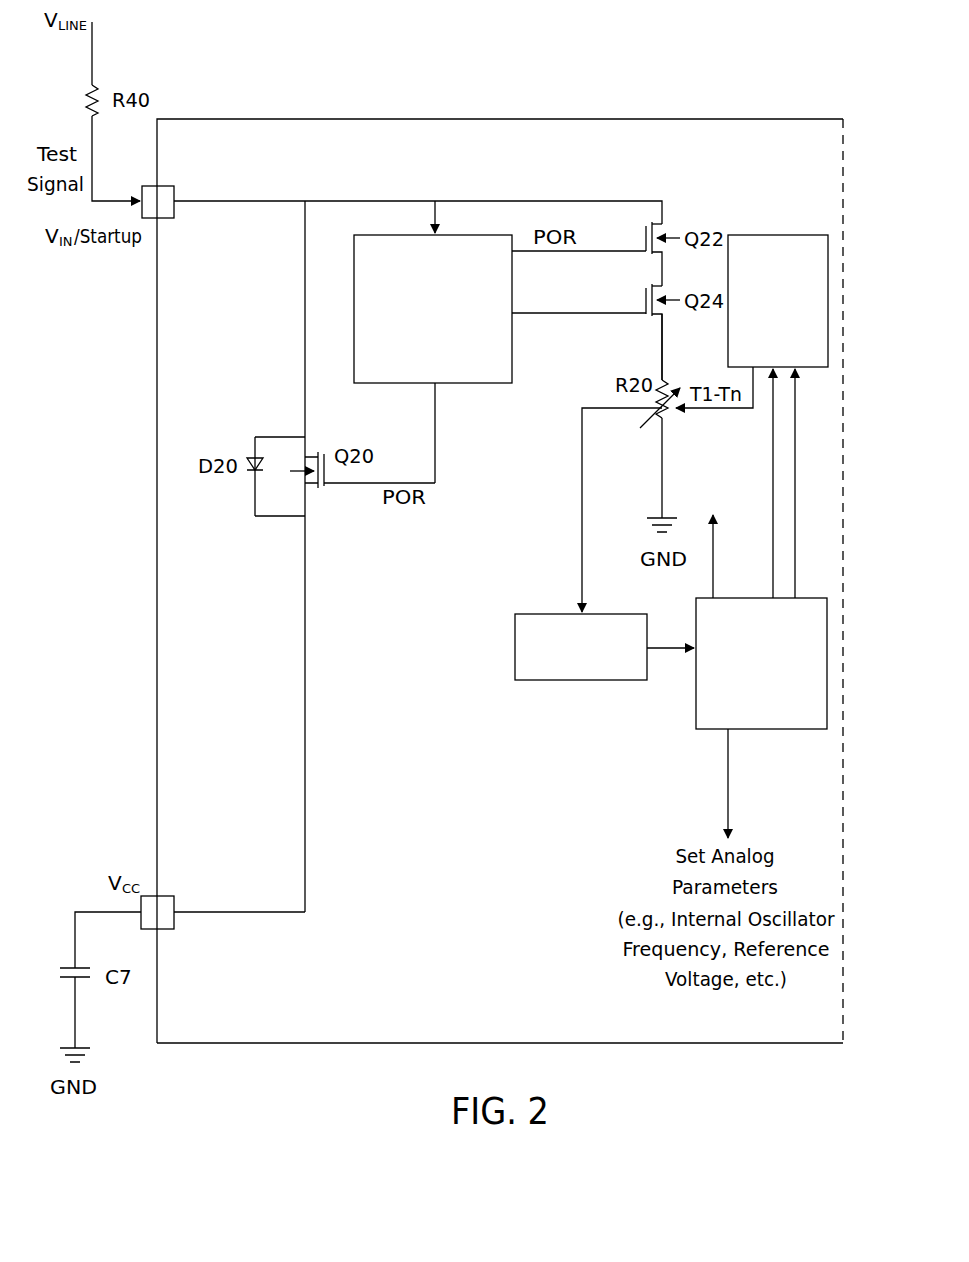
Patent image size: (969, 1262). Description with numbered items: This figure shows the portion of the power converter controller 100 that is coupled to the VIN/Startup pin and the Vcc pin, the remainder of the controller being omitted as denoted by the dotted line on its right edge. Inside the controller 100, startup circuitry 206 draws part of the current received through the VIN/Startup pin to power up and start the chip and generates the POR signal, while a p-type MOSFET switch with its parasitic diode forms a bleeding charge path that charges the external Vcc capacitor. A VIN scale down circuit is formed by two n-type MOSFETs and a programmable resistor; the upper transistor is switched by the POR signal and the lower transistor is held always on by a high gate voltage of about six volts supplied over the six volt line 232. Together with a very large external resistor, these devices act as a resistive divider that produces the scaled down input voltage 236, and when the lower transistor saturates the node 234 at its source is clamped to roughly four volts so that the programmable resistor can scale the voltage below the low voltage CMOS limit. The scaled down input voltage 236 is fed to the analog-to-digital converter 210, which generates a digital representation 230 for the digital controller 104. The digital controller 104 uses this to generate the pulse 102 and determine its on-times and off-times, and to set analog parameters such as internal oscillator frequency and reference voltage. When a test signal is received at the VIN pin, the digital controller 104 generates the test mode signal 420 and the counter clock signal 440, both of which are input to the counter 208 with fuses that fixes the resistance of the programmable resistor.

The power converter controller 100 is at (700, 118).
The pulse 102 is at (714, 572).
The digital controller 104 is at (761, 718).
The startup circuitry 206 is at (433, 342).
The counter with fuses 208 is at (778, 301).
The analog-to-digital converter 210 is at (581, 647).
The digital representation 230 is at (657, 644).
The 6 V supply line 232 is at (617, 313).
The node 234 is at (663, 352).
The scaled down input voltage 236 is at (580, 510).
The test mode signal 420 is at (796, 486).
The counter clock signal 440 is at (773, 423).